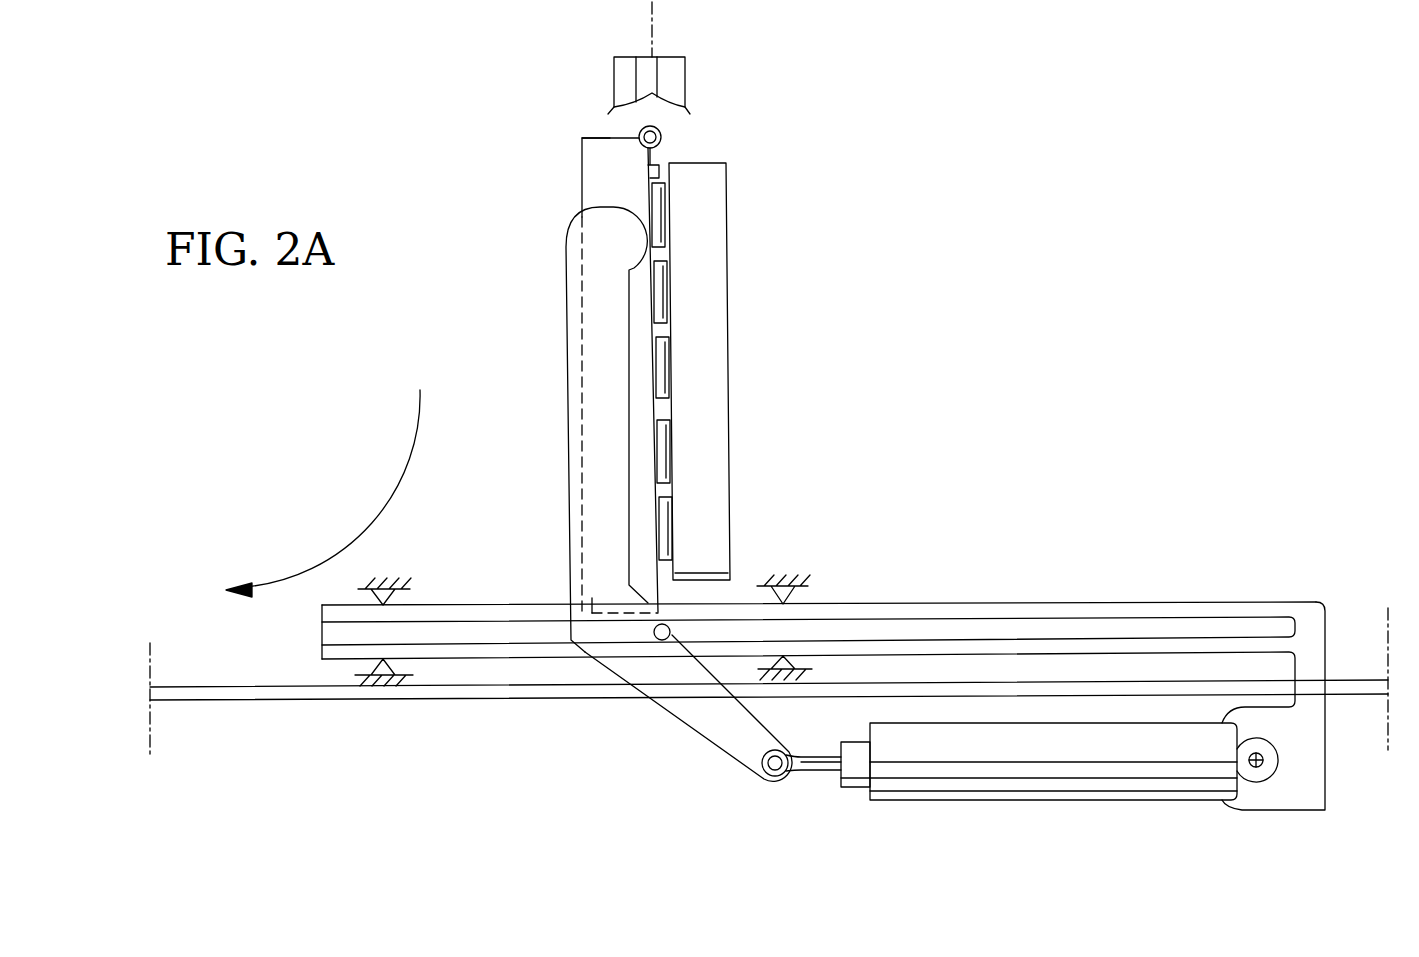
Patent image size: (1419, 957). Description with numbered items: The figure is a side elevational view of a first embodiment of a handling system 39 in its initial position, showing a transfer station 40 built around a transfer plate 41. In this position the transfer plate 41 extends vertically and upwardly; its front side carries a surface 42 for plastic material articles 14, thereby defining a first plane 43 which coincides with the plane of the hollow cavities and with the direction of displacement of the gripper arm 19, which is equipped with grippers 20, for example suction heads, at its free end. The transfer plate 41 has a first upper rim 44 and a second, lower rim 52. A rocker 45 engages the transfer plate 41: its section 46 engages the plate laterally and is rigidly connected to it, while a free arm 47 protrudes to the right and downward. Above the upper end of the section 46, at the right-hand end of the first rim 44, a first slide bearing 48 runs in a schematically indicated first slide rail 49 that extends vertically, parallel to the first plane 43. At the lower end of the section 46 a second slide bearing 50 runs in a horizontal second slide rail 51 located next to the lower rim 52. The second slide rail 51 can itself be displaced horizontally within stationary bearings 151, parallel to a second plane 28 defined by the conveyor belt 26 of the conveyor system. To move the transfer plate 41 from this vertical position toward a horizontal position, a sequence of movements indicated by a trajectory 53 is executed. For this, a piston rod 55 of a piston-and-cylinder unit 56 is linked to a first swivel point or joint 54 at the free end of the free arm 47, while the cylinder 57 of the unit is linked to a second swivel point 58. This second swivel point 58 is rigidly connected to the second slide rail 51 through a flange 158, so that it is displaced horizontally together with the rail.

The plastic material articles 14 is at (776, 196).
The gripper arm 19 is at (806, 256).
The grippers 20 is at (783, 331).
The conveyor belt 26 is at (253, 770).
The second plane 28 is at (219, 688).
The handling system 39 is at (1117, 144).
The transfer station 40 is at (952, 458).
The transfer plate 41 is at (597, 152).
The surface 42 is at (648, 170).
The first plane 43 is at (738, 32).
The first upper rim 44 is at (593, 138).
The rocker 45 is at (568, 465).
The section 46 is at (577, 308).
The free arm 47 is at (623, 800).
The first slide bearing 48 is at (735, 130).
The first slide rail 49 is at (805, 80).
The second slide bearing 50 is at (654, 624).
The second slide rail 51 is at (930, 603).
The second lower rim 52 is at (602, 622).
The trajectory 53 is at (395, 500).
The pivot 54 is at (737, 820).
The piston rod 55 is at (835, 835).
The piston-and-cylinder unit 56 is at (1050, 836).
The cylinder 57 is at (1160, 826).
The second swivel point 58 is at (1283, 815).
The stationary bearings 151 is at (782, 578).
The flange 158 is at (1360, 590).